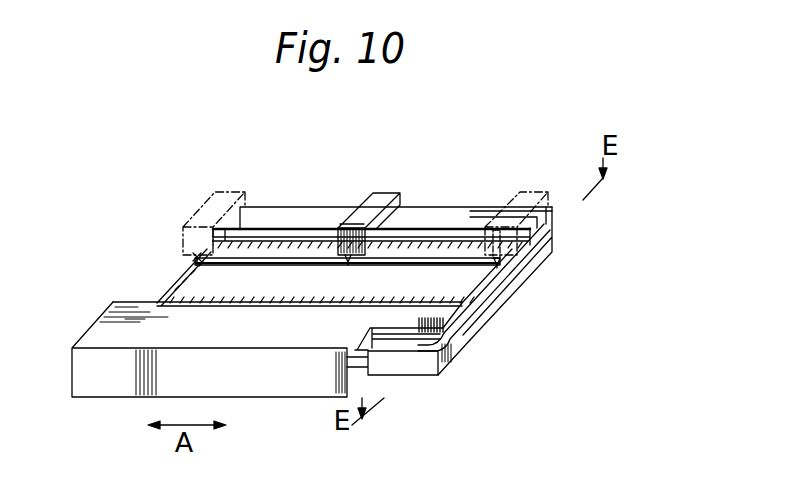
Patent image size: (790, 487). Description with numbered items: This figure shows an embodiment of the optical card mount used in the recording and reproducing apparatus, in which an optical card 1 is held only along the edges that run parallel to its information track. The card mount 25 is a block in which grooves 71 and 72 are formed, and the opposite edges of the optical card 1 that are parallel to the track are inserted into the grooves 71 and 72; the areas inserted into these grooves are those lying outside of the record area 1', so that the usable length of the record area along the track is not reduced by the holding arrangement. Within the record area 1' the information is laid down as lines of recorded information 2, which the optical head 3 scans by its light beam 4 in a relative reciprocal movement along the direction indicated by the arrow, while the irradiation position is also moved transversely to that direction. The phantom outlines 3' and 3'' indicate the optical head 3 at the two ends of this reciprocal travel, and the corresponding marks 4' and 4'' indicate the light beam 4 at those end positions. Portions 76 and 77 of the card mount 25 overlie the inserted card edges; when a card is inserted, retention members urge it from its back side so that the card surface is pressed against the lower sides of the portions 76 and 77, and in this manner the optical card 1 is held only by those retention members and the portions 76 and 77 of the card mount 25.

The optical card 1 is at (389, 383).
The record area 1' is at (382, 190).
The lines of recorded information 2 is at (425, 263).
The optical head 3 is at (372, 181).
The slider block (left end position) 3' is at (214, 193).
The slider block (right end position) 3'' is at (519, 195).
The light beam 4 is at (348, 200).
The pointer (left end position) 4' is at (162, 250).
The pointer (right end position) 4'' is at (491, 201).
The card mount 25 is at (290, 388).
The groove 71 is at (536, 233).
The groove 72 is at (450, 335).
The portion of the card mount 76 is at (538, 227).
The portion of the card mount 77 is at (460, 320).